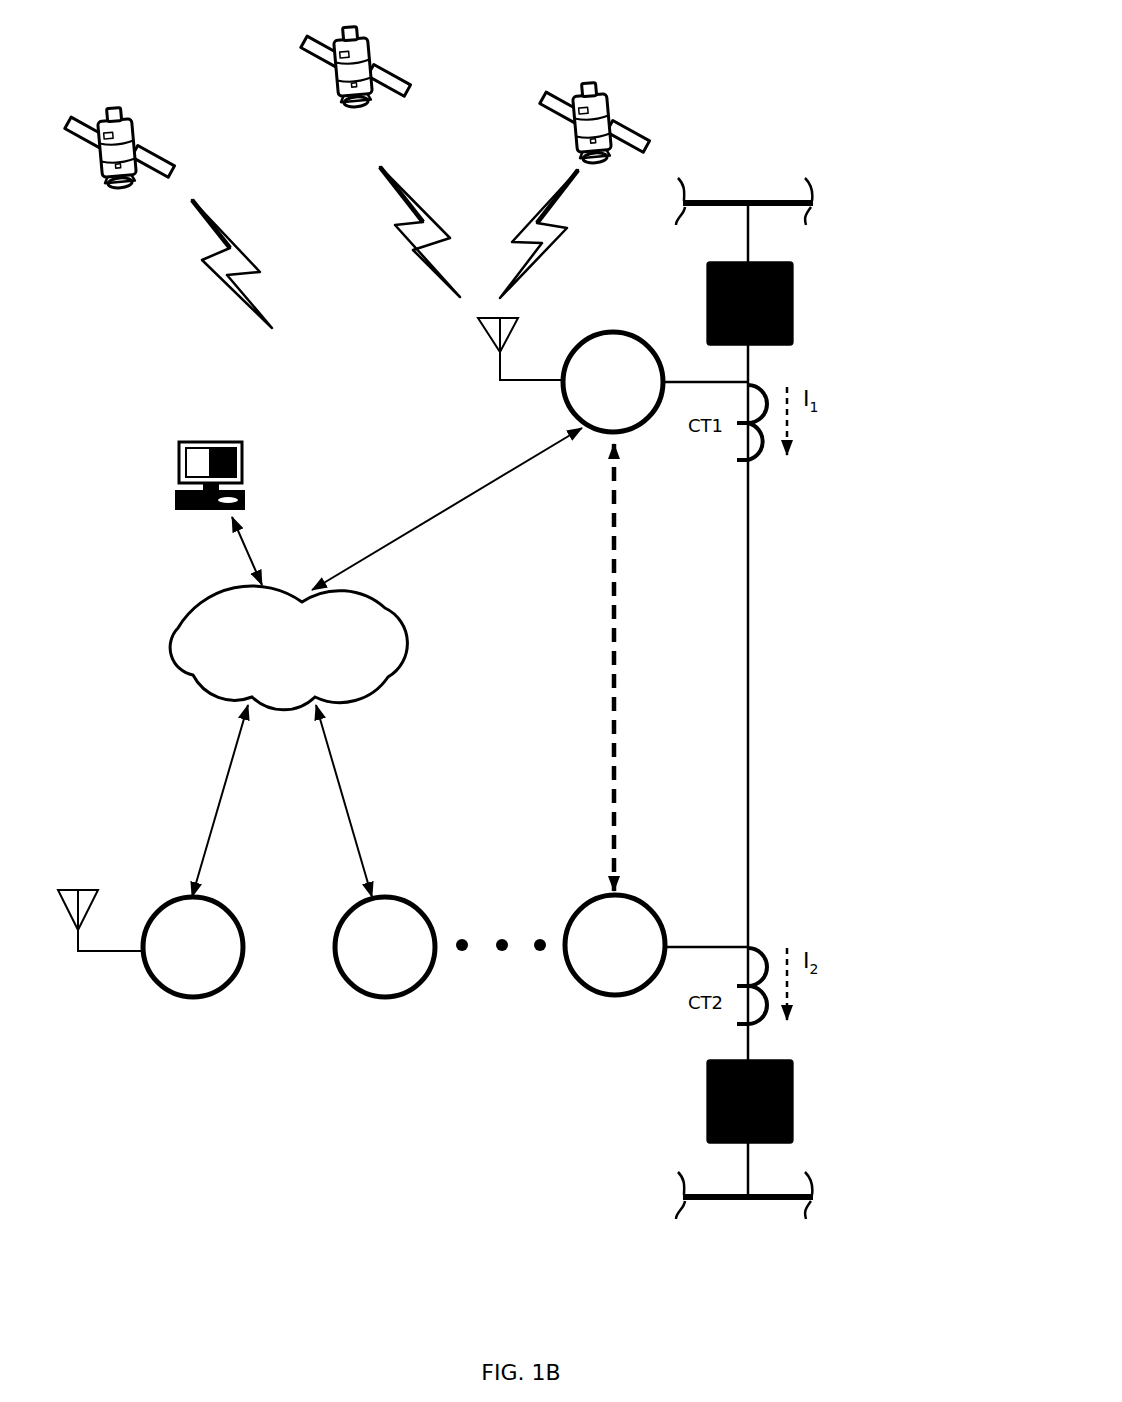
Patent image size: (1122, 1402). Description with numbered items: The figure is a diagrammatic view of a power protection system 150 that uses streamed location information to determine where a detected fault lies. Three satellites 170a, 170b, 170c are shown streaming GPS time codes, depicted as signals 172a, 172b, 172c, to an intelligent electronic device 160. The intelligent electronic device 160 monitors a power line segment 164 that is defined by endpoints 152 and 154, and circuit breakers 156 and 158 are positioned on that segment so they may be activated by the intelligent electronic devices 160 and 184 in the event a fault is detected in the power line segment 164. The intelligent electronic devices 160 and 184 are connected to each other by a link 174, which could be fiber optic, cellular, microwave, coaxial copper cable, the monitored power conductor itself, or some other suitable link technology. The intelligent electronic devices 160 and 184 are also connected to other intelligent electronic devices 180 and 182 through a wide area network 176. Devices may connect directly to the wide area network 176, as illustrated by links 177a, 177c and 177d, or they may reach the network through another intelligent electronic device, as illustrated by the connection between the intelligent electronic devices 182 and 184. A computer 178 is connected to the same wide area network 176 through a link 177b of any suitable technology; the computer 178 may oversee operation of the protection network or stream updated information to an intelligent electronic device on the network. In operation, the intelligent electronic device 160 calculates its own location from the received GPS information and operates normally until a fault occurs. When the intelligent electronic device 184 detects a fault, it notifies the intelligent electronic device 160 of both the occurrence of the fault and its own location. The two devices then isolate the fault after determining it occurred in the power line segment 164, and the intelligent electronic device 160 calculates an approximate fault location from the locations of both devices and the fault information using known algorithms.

The power system 150 is at (870, 160).
The endpoint 152 is at (775, 200).
The endpoint 154 is at (783, 1201).
The circuit breaker 156 is at (793, 300).
The circuit breaker 158 is at (793, 1097).
The intelligent electronic device 160 is at (595, 332).
The power line segment 164 is at (748, 672).
The satellite 170a is at (143, 146).
The satellite 170b is at (385, 63).
The satellite 170c is at (623, 123).
The satellite signal 172a is at (204, 215).
The satellite signal 172b is at (418, 257).
The satellite signal 172c is at (548, 203).
The link 174 is at (612, 690).
The wide area network 176 is at (178, 628).
The link 177a is at (413, 527).
The link 177b is at (248, 555).
The link 177c is at (215, 822).
The link 177d is at (372, 788).
The computer 178 is at (175, 492).
The intelligent electronic device 180 is at (153, 913).
The intelligent electronic device 182 is at (337, 913).
The intelligent electronic device 184 is at (568, 920).